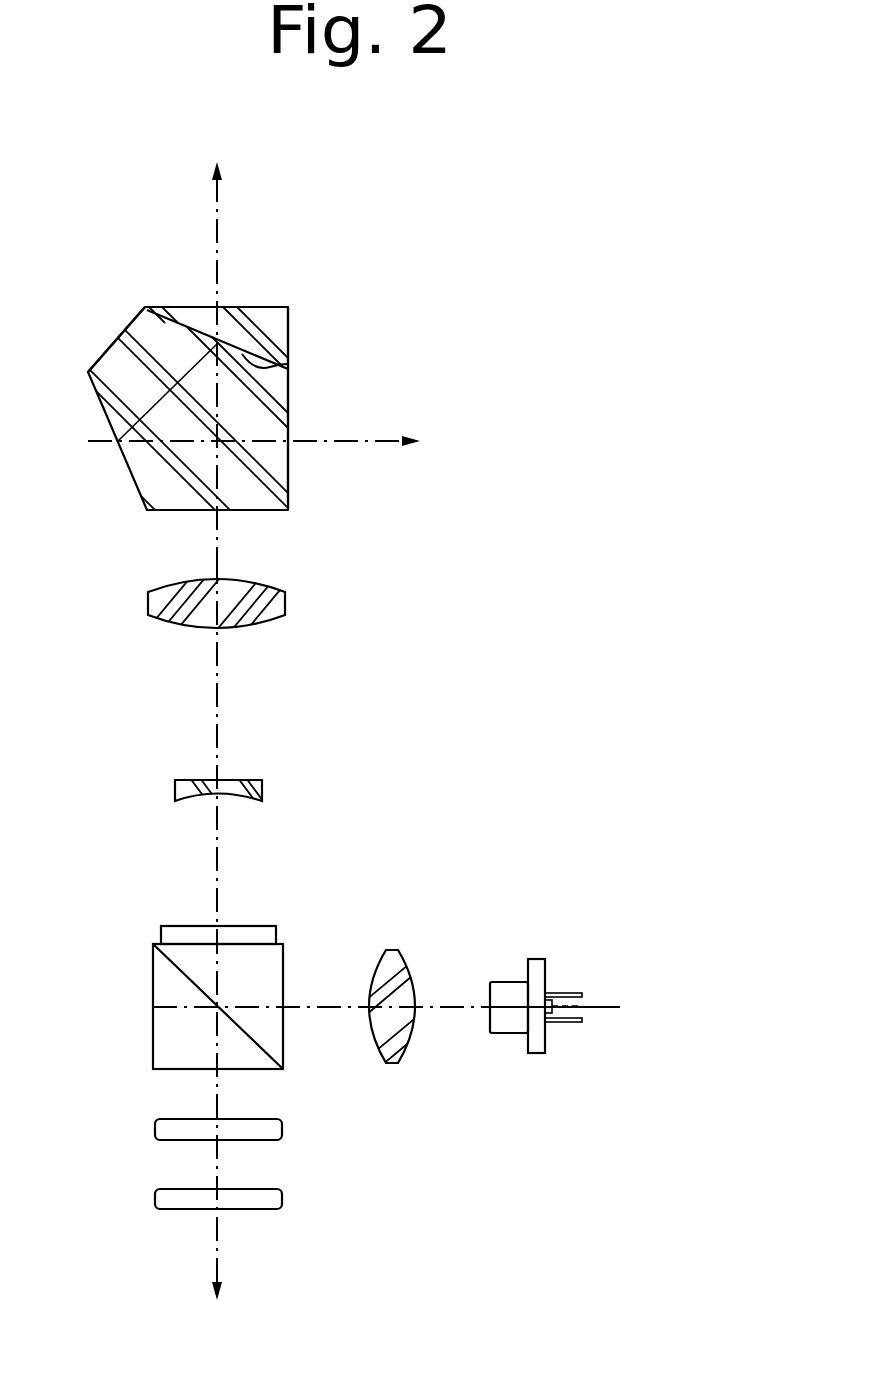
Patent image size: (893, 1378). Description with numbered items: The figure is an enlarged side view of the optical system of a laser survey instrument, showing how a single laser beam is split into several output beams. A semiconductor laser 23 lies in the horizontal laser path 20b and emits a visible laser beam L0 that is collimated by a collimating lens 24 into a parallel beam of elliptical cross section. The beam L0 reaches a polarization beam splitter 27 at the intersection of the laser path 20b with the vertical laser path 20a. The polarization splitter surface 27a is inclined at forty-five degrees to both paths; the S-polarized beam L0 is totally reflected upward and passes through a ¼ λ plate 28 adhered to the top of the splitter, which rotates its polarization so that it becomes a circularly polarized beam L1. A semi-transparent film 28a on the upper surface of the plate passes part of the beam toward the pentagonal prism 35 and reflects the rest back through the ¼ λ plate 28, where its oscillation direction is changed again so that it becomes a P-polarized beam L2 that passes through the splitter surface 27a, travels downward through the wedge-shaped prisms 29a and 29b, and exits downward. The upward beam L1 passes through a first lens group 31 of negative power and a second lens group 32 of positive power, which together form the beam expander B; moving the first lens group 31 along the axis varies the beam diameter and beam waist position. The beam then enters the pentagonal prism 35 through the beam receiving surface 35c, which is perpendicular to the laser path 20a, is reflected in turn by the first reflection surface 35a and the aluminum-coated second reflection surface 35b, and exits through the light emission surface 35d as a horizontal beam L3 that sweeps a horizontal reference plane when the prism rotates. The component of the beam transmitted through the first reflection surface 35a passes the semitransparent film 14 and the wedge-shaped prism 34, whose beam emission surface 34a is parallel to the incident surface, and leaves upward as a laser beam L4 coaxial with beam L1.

The semitransparent film 14 is at (280, 360).
The semiconductor laser 23 is at (507, 988).
The collimating lens 24 is at (390, 960).
The polarization beam splitter 27 is at (226, 1038).
The polarization splitter surface 27a is at (257, 1040).
The ¼ λ plate 28 is at (252, 888).
The semi-transparent film 28a is at (240, 926).
The wedge-shaped prism 29a is at (267, 1128).
The wedge-shaped prism 29b is at (263, 1198).
The first lens group 31 is at (276, 767).
The second lens group 32 is at (277, 602).
The beam expander B is at (293, 691).
The wedge-shaped prism 34 is at (268, 313).
The beam emission surface 34a is at (177, 305).
The pentagonal prism 35 is at (215, 420).
The first reflection surface 35a is at (288, 350).
The second reflection surface 35b is at (130, 453).
The beam receiving surface 35c is at (265, 512).
The light emission surface 35d is at (288, 462).
The laser beam L0 is at (458, 1008).
The laser path 20b is at (386, 1076).
The laser beam L1 is at (217, 690).
The laser beam L2 is at (217, 1162).
The laser beam L3 is at (375, 440).
The laser beam L4 is at (217, 215).
The laser path 20a is at (322, 361).